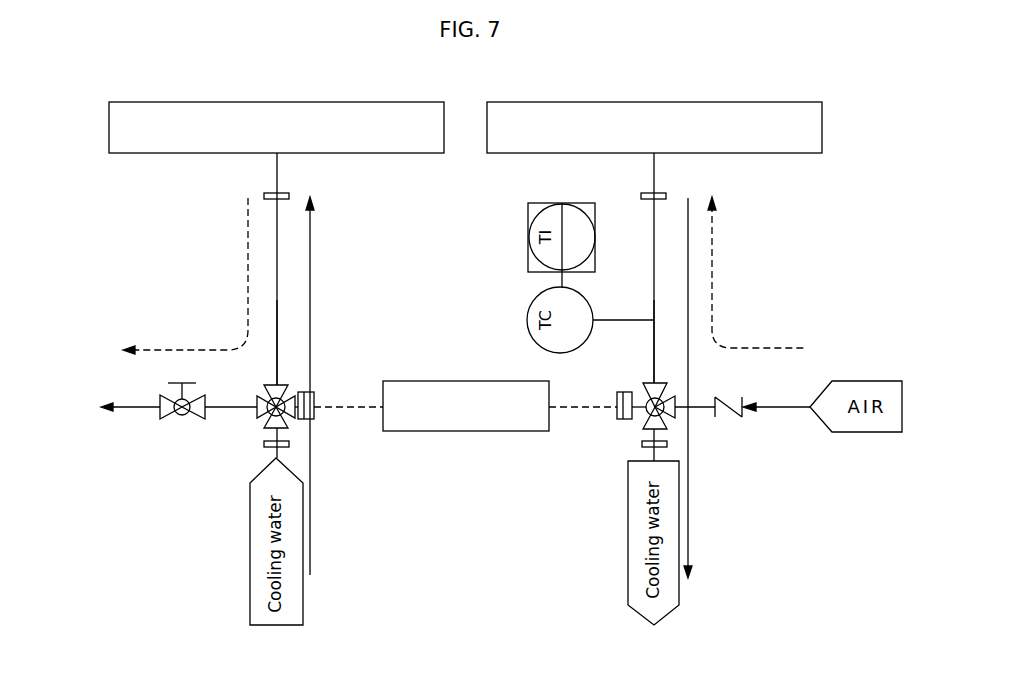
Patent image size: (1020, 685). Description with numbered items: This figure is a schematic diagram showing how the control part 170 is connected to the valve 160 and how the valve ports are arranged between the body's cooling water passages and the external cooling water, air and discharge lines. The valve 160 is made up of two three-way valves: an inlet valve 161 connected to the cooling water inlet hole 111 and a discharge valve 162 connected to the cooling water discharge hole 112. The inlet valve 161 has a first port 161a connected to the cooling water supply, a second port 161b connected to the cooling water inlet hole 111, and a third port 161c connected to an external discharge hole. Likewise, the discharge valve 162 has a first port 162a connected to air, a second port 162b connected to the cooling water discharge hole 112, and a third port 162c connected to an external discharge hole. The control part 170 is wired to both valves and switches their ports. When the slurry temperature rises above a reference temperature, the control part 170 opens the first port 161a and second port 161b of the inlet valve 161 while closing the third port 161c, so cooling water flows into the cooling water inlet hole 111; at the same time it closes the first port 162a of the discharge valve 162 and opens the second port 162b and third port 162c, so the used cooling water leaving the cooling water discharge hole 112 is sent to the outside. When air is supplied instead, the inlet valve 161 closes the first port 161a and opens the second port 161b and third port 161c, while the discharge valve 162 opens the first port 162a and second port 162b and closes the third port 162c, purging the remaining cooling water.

The cooling water inlet hole 111 is at (109, 127).
The cooling water discharge hole 112 is at (822, 127).
The valve 160 is at (413, 481).
The inlet valve 161 is at (286, 413).
The first port 161a is at (264, 444).
The second port 161b is at (277, 366).
The third port 161c is at (222, 407).
The discharge valve 162 is at (646, 415).
The first port 162a is at (714, 398).
The second port 162b is at (654, 366).
The third port 162c is at (662, 431).
The control part 170 is at (446, 381).